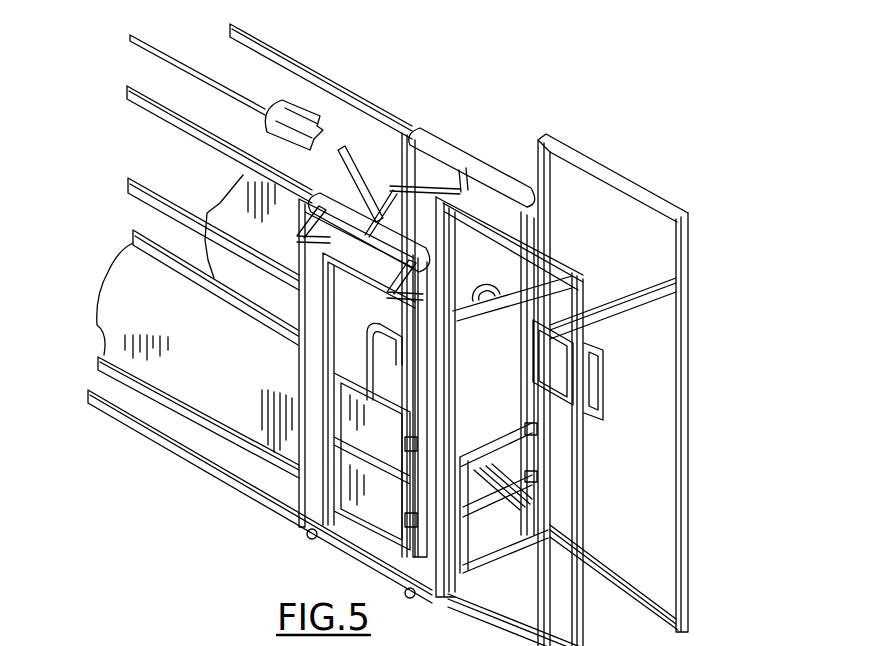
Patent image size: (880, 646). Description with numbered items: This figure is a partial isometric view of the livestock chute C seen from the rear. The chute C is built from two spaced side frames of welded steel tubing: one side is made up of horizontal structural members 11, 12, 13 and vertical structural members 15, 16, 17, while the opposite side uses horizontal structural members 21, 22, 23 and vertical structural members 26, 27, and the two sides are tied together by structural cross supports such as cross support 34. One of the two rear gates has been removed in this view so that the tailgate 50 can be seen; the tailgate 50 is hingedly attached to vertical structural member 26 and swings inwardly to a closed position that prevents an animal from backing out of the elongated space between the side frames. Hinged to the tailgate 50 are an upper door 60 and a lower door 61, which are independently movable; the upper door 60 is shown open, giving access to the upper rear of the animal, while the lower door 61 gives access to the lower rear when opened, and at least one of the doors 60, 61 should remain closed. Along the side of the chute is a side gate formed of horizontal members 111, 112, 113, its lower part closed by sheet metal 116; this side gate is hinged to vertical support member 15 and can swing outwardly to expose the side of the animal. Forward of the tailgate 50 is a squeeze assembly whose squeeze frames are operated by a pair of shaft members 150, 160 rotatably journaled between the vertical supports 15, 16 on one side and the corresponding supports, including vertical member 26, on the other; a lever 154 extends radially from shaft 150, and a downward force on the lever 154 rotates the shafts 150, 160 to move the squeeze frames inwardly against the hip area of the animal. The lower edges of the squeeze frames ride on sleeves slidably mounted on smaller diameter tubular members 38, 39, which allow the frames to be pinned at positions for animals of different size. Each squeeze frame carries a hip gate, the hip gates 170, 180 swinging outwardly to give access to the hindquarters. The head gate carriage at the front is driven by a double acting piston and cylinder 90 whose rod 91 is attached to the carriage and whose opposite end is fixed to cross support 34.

The horizontal structural member 11 is at (210, 462).
The horizontal structural member 12 is at (130, 92).
The horizontal structural member 13 is at (572, 268).
The vertical structural member 15 is at (300, 367).
The vertical structural member 16 is at (443, 552).
The vertical structural member 17 is at (583, 464).
The horizontal structural member 21 is at (648, 603).
The horizontal structural member 22 is at (255, 38).
The horizontal structural member 23 is at (612, 168).
The vertical structural member 26 is at (552, 207).
The vertical structural member 27 is at (688, 537).
The structural cross support 34 is at (655, 287).
The tubular member 38 is at (413, 596).
The tubular member 39 is at (310, 533).
The tailgate 50 is at (518, 556).
The upper door 60 is at (605, 358).
The lower door 61 is at (510, 493).
The double acting piston and cylinder 90 is at (298, 117).
The rod 91 is at (130, 38).
The horizontal member 111 is at (150, 397).
The horizontal member 112 is at (136, 233).
The horizontal member 113 is at (130, 183).
The sheet metal 116 is at (220, 327).
The shaft member 150 is at (387, 240).
The lever 154 is at (346, 157).
The shaft member 160 is at (440, 147).
The hip gate 170 is at (356, 535).
The hip gate 180 is at (497, 265).
The livestock chute C is at (422, 111).